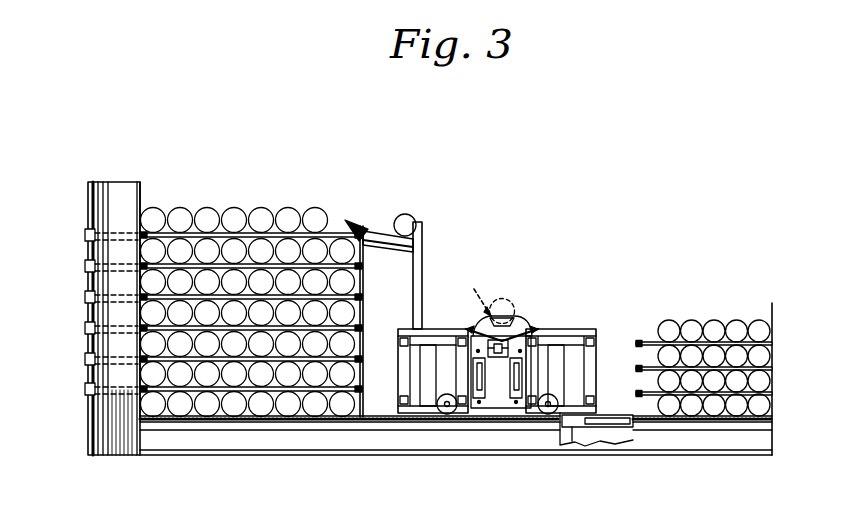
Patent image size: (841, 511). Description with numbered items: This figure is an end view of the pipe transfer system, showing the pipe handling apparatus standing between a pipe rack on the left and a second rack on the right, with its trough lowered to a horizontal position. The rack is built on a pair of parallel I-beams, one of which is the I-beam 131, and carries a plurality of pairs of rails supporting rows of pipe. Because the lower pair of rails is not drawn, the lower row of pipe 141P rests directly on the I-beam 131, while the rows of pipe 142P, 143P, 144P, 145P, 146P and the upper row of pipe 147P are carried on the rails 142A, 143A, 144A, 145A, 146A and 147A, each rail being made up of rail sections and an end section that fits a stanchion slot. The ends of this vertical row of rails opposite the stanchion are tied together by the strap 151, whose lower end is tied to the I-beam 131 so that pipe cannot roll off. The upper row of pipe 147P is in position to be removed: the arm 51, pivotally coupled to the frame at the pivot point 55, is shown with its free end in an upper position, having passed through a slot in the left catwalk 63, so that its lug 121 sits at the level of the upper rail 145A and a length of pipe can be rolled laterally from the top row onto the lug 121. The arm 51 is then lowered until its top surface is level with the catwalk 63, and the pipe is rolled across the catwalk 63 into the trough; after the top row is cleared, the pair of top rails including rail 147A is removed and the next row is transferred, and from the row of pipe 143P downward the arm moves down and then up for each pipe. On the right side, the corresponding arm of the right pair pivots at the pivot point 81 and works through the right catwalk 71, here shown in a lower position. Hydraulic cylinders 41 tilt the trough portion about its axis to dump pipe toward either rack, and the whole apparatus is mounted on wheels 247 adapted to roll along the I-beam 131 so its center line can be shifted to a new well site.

The lower row of pipe 141P is at (145, 402).
The row of pipe 142P is at (142, 404).
The row of pipe 143P is at (150, 362).
The row of pipe 144P is at (143, 318).
The row of pipe 145P is at (140, 275).
The row of pipe 146P is at (140, 244).
The upper row of pipe 147P is at (140, 214).
The rail 142A is at (337, 407).
The rail 143A is at (140, 396).
The rail 144A is at (150, 334).
The upper rail 145A is at (152, 300).
The rail 146A is at (300, 246).
The top rail 147A is at (210, 212).
The strap 151 is at (358, 348).
The lug 121 is at (380, 238).
The arm 51 is at (425, 262).
The left catwalk 63 is at (445, 329).
The pivot point 55 is at (420, 348).
The pivot point 81 is at (572, 348).
The hydraulic cylinder 41 is at (516, 404).
The wheel 247 is at (550, 414).
The catwalk 71 is at (633, 350).
The I-beam 131 is at (263, 456).